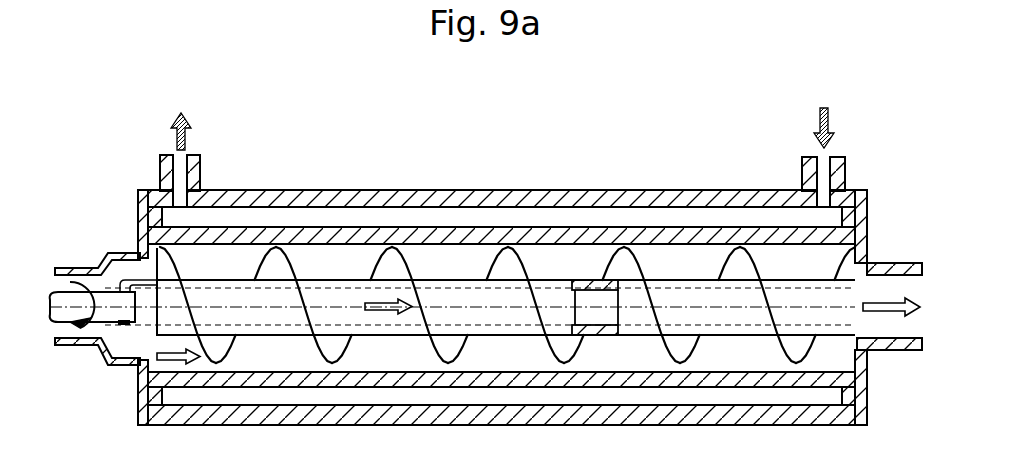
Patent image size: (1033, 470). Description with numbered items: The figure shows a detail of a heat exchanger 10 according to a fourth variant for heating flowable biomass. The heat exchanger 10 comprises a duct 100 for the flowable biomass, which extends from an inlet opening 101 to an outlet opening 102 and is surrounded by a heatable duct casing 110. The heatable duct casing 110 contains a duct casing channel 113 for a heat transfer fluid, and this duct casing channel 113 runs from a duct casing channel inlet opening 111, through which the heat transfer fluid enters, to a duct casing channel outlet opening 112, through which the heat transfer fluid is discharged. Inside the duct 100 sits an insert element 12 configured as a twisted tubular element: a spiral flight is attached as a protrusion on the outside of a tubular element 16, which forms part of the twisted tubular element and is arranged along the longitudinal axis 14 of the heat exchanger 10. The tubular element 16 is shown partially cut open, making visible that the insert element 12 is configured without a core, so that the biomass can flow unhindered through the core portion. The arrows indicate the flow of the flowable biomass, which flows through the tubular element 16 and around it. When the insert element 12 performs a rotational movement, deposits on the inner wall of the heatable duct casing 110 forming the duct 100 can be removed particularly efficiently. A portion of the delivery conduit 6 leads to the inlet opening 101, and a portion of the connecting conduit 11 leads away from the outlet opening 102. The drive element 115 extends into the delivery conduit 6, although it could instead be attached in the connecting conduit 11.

The heat exchanger 10 is at (494, 182).
The heatable duct casing 110 is at (233, 197).
The duct casing channel 113 is at (325, 217).
The duct casing channel outlet opening 112 is at (182, 187).
The duct casing channel inlet opening 111 is at (827, 187).
The delivery conduit 6 is at (120, 253).
The inlet opening 101 is at (118, 340).
The connecting conduit 11 is at (890, 268).
The outlet opening 102 is at (883, 332).
The duct 100 is at (427, 263).
The insert element 12 is at (705, 277).
The longitudinal axis 14 is at (672, 308).
The tubular element 16 is at (603, 280).
The drive element 115 is at (67, 315).